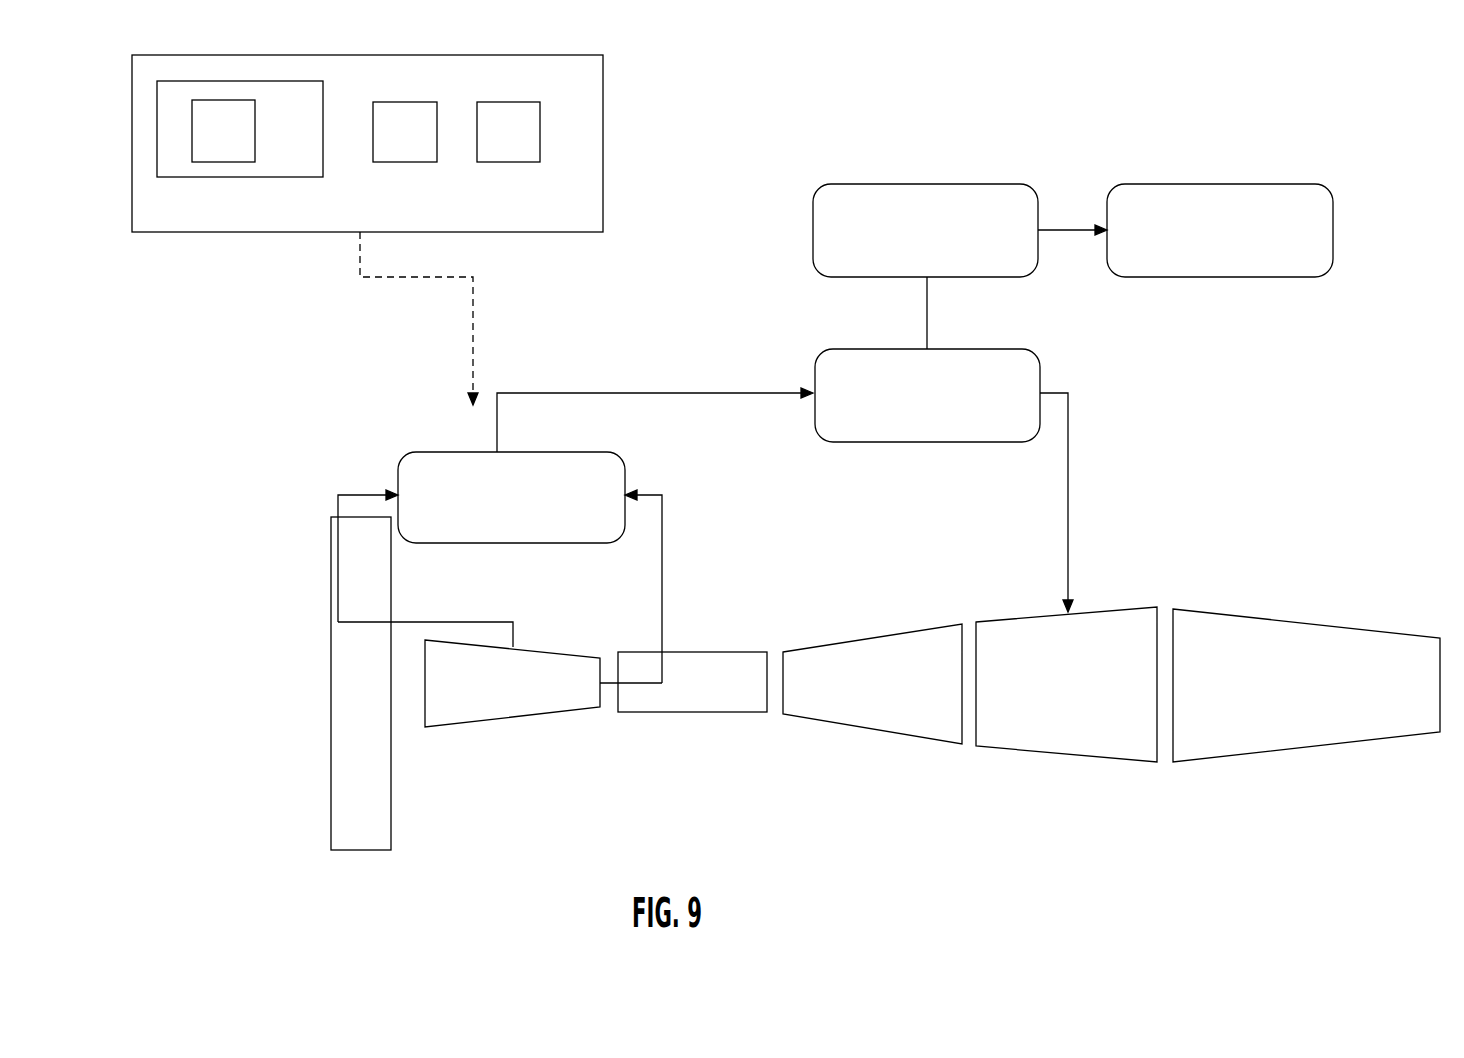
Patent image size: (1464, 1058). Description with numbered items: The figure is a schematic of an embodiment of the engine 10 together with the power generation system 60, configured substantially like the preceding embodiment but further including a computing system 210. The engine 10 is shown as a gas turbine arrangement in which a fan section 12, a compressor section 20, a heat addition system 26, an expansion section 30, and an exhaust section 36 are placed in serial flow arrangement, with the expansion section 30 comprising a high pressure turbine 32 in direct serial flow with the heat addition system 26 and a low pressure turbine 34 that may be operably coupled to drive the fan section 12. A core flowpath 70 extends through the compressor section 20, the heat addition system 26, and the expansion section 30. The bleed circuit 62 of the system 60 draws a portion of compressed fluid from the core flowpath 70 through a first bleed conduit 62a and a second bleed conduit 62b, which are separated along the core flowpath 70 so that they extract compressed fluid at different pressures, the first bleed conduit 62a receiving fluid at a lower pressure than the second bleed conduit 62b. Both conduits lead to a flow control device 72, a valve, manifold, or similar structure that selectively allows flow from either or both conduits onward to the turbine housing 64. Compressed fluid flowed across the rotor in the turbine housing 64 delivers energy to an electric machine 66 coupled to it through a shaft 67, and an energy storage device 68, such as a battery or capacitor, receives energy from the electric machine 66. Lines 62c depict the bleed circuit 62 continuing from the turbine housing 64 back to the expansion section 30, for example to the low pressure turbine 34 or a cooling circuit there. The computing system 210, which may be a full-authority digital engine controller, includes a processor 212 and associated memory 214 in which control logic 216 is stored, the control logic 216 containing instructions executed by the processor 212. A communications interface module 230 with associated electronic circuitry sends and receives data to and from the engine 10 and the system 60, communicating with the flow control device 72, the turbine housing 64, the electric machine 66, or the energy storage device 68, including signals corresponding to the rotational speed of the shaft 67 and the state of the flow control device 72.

The engine 10 is at (1089, 102).
The fan section 12 is at (360, 850).
The compressor section 20 is at (457, 712).
The heat addition system 26 is at (680, 712).
The expansion section 30 is at (940, 845).
The high pressure turbine 32 is at (922, 725).
The low pressure turbine 34 is at (1137, 740).
The exhaust section 36 is at (1393, 725).
The power generation system 60 is at (630, 352).
The bleed circuit 62 is at (717, 393).
The first bleed conduit 62a is at (337, 517).
The second bleed conduit 62b is at (662, 565).
The lines of the bleed circuit 62c is at (1068, 520).
The turbine housing 64 is at (1040, 373).
The electric machine 66 is at (1010, 184).
The shaft 67 is at (930, 318).
The energy storage device 68 is at (1167, 184).
The core flowpath 70 is at (573, 703).
The flow control device 72 is at (455, 452).
The computing system 210 is at (603, 103).
The processor 212 is at (407, 102).
The memory 214 is at (157, 160).
The control logic 216 is at (223, 162).
The communications interface module 230 is at (540, 162).